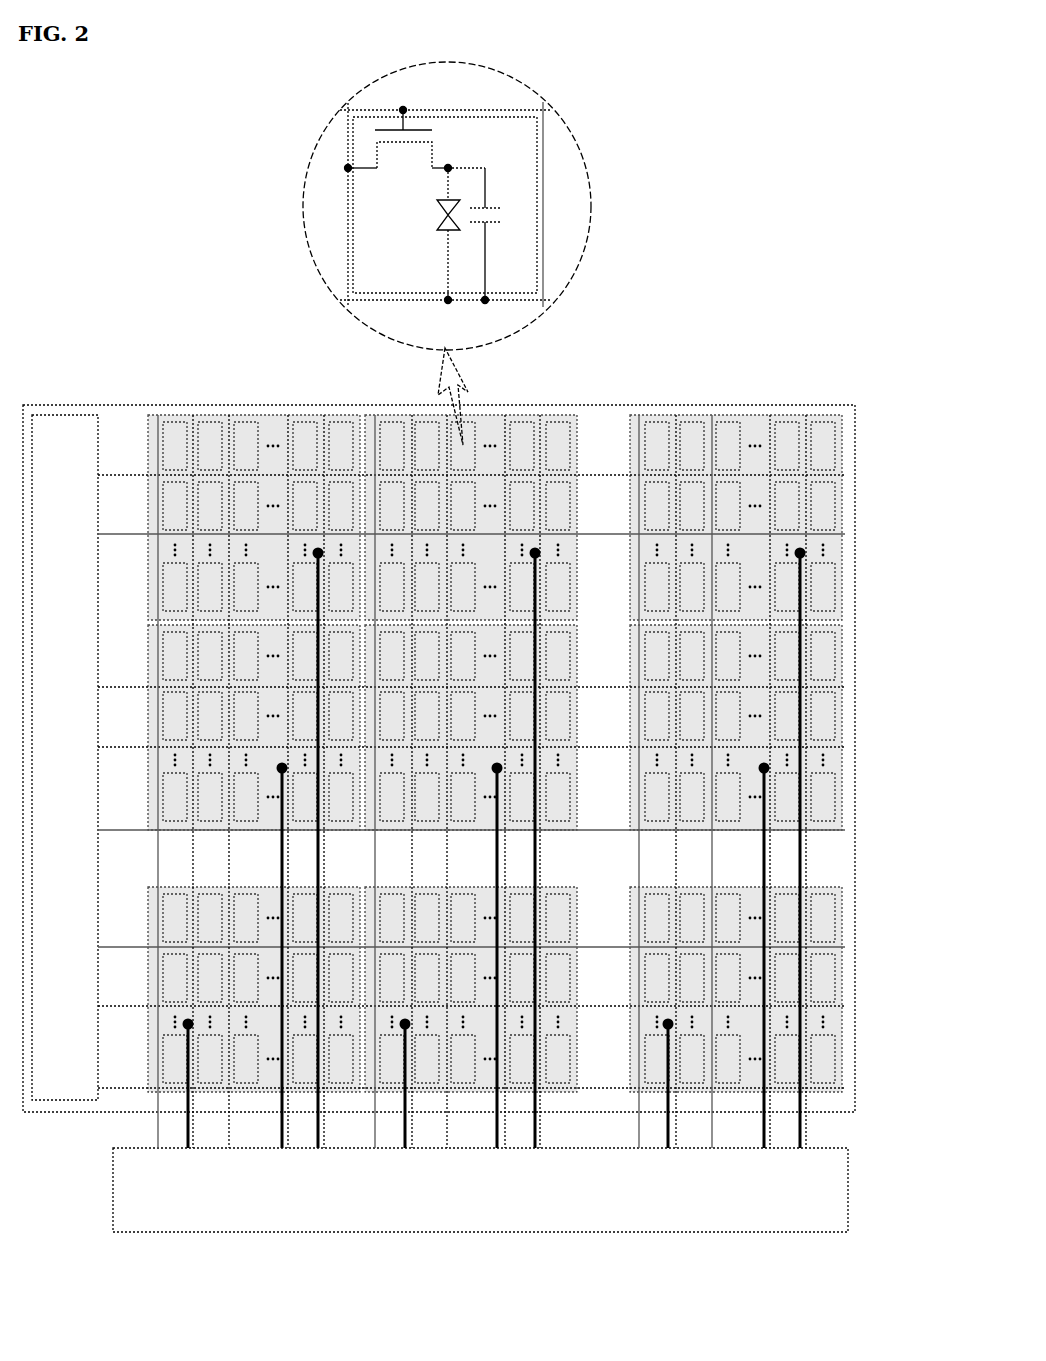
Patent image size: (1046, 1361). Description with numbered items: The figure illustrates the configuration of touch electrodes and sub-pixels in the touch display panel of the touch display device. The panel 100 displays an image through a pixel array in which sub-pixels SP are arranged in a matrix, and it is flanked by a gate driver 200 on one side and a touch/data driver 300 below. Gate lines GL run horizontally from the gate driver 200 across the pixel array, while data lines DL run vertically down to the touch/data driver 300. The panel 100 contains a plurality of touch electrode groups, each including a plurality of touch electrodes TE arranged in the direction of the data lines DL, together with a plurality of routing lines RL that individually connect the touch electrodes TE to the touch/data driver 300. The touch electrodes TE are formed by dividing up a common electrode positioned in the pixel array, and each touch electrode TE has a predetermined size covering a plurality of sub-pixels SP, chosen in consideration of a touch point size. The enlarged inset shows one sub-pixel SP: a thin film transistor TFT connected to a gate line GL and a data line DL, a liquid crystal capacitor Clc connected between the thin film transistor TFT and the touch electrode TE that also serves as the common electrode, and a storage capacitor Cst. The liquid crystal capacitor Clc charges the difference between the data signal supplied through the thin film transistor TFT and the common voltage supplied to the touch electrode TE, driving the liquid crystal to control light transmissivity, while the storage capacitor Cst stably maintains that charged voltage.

The panel 100 is at (688, 403).
The gate driver 200 is at (46, 771).
The touch/data driver 300 is at (462, 1203).
The gate line GL is at (400, 88).
The data line DL is at (325, 196).
The routing line RL is at (802, 872).
The sub-pixel SP is at (565, 412).
The touch electrode TE is at (207, 415).
The thin film transistor TFT is at (398, 141).
The liquid crystal capacitor Clc is at (433, 234).
The storage capacitor Cst is at (489, 234).